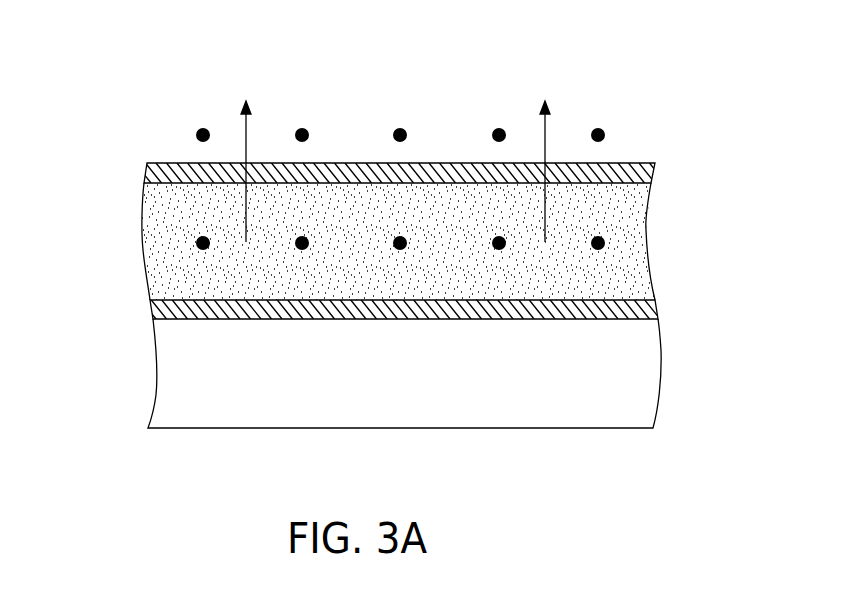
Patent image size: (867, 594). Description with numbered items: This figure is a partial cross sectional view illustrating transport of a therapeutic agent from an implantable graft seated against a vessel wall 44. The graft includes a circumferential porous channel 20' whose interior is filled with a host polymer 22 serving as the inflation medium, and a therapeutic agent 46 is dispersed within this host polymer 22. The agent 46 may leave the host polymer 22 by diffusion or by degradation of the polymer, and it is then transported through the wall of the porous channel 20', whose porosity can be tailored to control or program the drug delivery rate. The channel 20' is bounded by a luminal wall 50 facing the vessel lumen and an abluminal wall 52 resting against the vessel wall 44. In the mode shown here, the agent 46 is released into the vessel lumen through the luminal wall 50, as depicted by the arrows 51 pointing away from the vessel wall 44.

The porous channel 20' is at (680, 214).
The host polymer 22 is at (177, 284).
The vessel wall 44 is at (175, 389).
The therapeutic agent 46 is at (605, 135).
The luminal wall 50 is at (162, 171).
The arrows 51 is at (395, 152).
The abluminal wall 52 is at (157, 313).